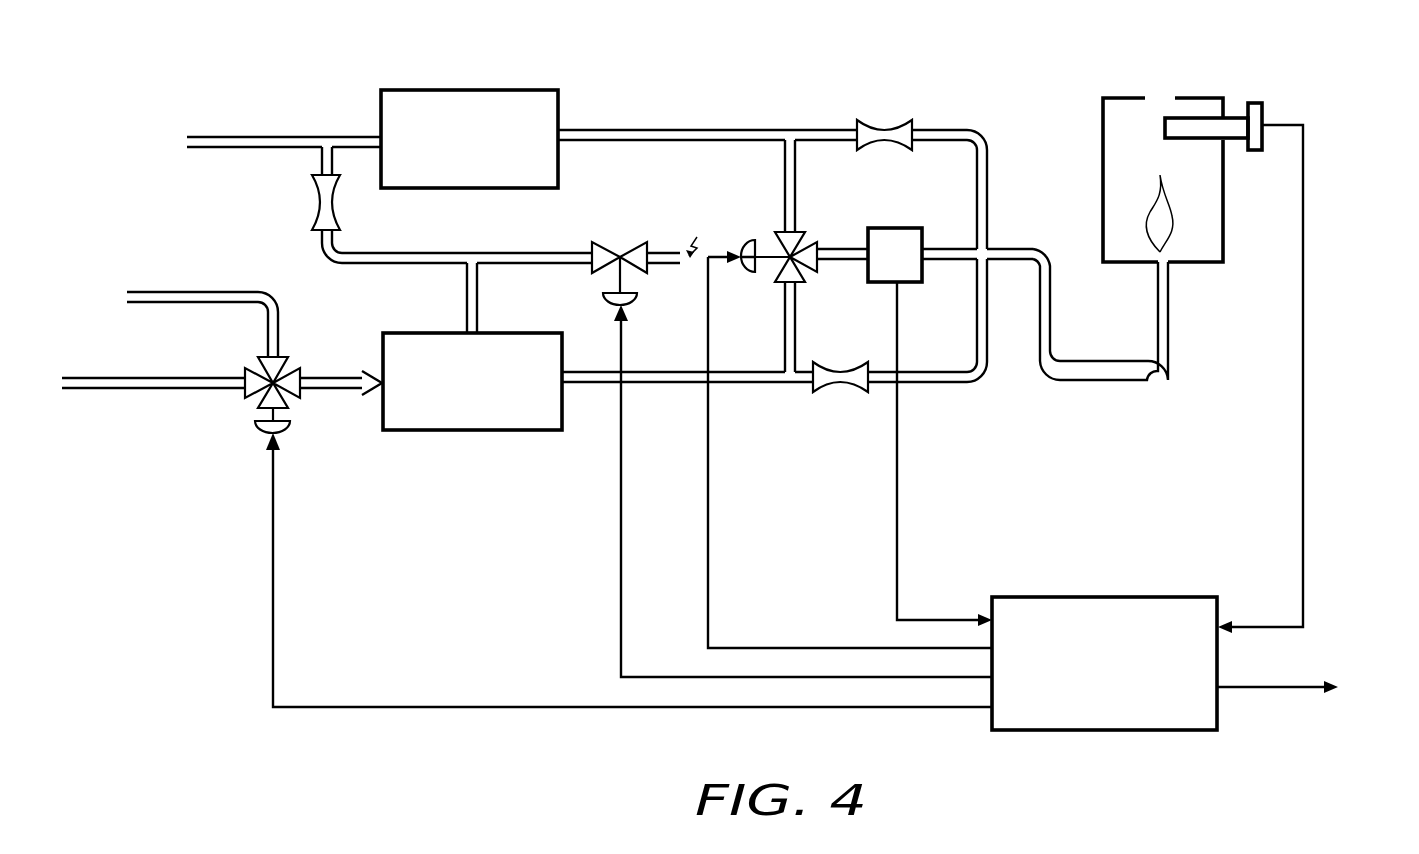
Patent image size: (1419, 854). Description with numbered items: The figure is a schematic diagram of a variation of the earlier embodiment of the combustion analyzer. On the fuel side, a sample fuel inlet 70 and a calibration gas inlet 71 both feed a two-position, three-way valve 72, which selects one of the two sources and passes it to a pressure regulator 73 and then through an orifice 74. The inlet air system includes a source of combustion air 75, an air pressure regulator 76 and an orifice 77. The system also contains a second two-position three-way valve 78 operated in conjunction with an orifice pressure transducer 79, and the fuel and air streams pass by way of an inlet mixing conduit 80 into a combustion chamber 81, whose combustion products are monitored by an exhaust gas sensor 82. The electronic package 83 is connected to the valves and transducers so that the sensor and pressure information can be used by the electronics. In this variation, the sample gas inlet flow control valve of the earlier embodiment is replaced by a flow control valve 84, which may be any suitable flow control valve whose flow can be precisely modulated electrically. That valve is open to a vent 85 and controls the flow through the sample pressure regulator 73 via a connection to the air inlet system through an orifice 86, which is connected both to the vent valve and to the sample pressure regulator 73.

The sample fuel inlet 70 is at (246, 290).
The calibration gas inlet 71 is at (235, 392).
The two-position, three-way valve 72 is at (297, 399).
The pressure regulator 73 is at (470, 430).
The orifice 74 is at (832, 392).
The source of combustion air 75 is at (248, 147).
The air pressure regulator 76 is at (460, 91).
The orifice 77 is at (872, 121).
The second two-position three-way valve 78 is at (796, 236).
The orifice pressure transducer 79 is at (892, 228).
The inlet mixing conduit 80 is at (1112, 373).
The combustion chamber 81 is at (1112, 161).
The exhaust gas sensor 82 is at (1243, 136).
The electronic package 83 is at (1098, 604).
The flow control valve 84 is at (620, 241).
The vent 85 is at (658, 266).
The orifice 86 is at (341, 208).